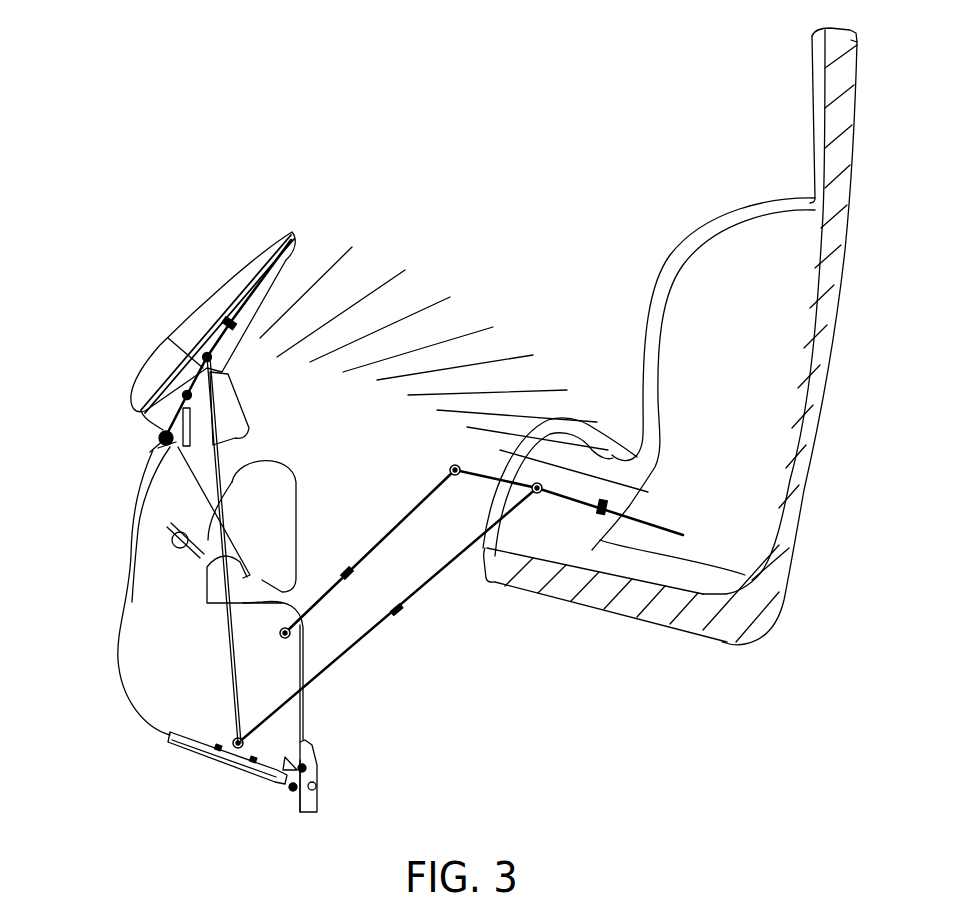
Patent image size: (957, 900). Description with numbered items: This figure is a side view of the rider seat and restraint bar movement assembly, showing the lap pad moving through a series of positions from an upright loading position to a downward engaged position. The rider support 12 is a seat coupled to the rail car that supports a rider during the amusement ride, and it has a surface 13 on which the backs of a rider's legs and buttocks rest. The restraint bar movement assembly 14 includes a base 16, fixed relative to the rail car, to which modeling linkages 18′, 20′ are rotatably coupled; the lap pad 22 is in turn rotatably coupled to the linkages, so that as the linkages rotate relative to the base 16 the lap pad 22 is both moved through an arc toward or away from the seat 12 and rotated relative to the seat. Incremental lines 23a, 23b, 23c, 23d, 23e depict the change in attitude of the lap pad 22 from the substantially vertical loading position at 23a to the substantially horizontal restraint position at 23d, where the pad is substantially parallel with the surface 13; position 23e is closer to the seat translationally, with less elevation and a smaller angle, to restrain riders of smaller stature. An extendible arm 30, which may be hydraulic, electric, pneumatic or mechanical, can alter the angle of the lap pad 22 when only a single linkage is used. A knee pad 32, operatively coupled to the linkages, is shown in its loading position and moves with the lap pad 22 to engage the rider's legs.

The rider support 12 is at (637, 216).
The surface of the seat 13 is at (665, 580).
The restraint bar movement assembly 14 is at (103, 418).
The base 16 is at (303, 713).
The modeling linkage 18′ is at (228, 642).
The modeling linkage 20′ is at (245, 460).
The lap pad 22 is at (217, 287).
The incremental line 23a is at (292, 232).
The incremental line 23b is at (338, 262).
The incremental line 23c is at (610, 442).
The incremental line 23d is at (658, 430).
The incremental line 23e is at (650, 447).
The extendible arm 30 is at (155, 450).
The knee pad 32 is at (294, 486).